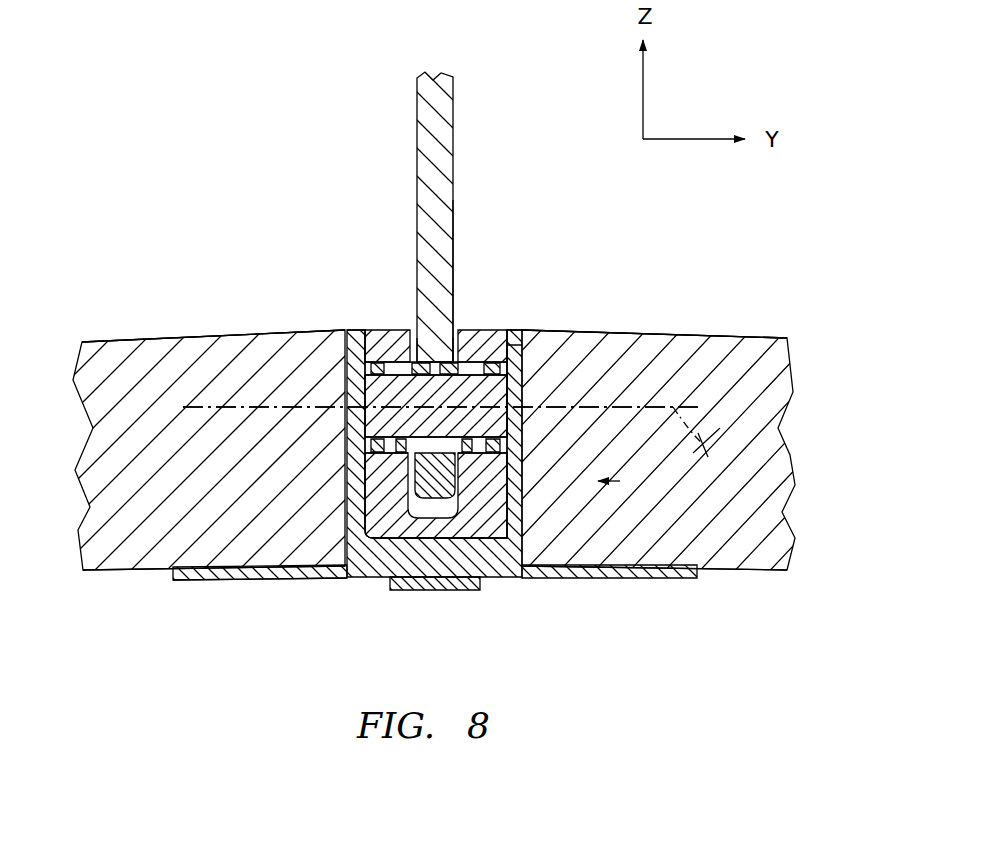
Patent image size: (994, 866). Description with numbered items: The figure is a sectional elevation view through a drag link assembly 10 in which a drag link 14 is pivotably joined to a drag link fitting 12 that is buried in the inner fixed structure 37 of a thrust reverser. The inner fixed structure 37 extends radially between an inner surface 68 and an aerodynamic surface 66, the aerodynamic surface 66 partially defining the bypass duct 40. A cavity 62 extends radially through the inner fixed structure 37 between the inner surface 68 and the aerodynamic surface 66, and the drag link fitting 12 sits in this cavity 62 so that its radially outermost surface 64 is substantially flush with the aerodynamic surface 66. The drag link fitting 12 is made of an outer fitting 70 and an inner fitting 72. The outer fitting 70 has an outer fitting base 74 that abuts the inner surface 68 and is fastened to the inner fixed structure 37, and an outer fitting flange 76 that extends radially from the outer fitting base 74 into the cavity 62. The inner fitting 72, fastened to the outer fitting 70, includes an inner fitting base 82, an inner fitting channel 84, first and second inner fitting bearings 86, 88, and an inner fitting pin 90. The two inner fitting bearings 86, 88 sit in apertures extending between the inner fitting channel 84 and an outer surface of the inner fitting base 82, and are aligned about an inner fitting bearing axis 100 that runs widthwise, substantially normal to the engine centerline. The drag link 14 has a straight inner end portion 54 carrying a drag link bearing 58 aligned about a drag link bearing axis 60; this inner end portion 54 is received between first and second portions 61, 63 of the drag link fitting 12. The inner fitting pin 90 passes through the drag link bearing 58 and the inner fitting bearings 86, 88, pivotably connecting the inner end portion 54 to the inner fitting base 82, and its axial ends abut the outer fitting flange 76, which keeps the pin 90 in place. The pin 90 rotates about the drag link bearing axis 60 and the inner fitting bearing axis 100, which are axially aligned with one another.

The panel fastening system 10 is at (318, 153).
The drag link fitting 12 is at (405, 282).
The drag link 14 is at (412, 139).
The inner fixed structure 37 is at (111, 474).
The bypass duct 40 is at (204, 253).
The inner end portion 54 is at (437, 227).
The drag link bearing 58 is at (438, 345).
The drag link bearing axis 60 is at (584, 407).
The first portion of the drag link fitting 61 is at (349, 381).
The cavity 62 is at (399, 305).
The second portion of the drag link fitting 63 is at (523, 376).
The radially outermost surface 64 is at (482, 328).
The aerodynamic surface 66 is at (181, 336).
The inner surface 68 is at (133, 574).
The outer fitting 70 is at (252, 606).
The inner fitting 72 is at (483, 523).
The outer fitting base 74 is at (304, 573).
The outer fitting flange 76 is at (356, 509).
The inner fitting base 82 is at (385, 485).
The inner fitting channel 84 is at (437, 508).
The first inner fitting bearing 86 is at (368, 330).
The second inner fitting bearing 88 is at (509, 332).
The inner fitting pin 90 is at (527, 437).
The inner fitting bearing axis 100 is at (663, 448).